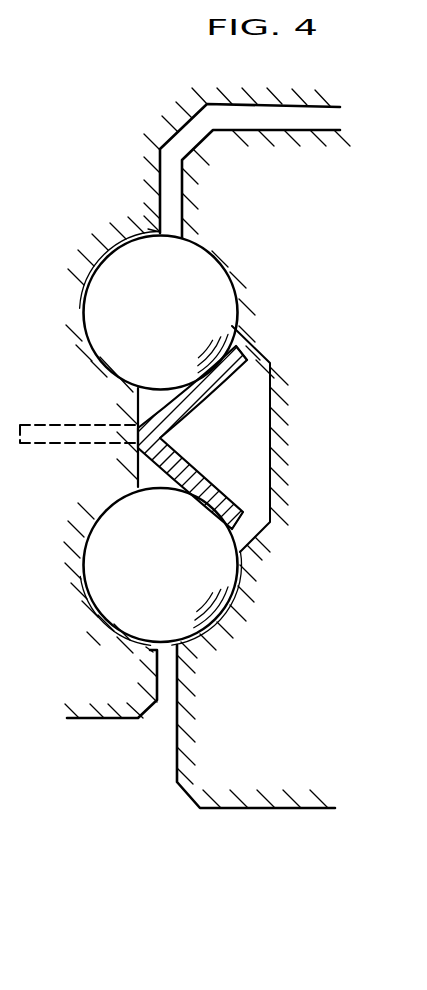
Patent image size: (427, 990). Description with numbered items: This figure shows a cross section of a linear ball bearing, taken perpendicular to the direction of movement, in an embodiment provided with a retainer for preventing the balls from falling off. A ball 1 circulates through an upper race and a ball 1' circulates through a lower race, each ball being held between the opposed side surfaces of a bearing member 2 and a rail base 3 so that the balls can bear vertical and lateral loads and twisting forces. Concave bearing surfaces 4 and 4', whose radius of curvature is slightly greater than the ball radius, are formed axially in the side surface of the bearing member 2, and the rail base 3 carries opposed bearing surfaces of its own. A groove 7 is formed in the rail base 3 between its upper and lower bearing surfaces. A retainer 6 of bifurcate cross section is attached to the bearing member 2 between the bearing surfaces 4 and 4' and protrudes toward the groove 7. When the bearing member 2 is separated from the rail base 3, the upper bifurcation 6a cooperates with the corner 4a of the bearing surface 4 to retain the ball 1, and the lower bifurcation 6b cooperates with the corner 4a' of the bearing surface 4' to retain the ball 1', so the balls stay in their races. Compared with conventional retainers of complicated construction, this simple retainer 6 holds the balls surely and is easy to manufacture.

The ball 1 is at (179, 313).
The ball 1' is at (171, 572).
The bearing member 2 is at (152, 114).
The rail base 3 is at (235, 140).
The bearing surface 4 is at (92, 274).
The bearing surface 4' is at (132, 586).
The corner of bearing surface 4a is at (123, 208).
The corner of bearing surface 4a' is at (114, 665).
The retainer 6 is at (163, 439).
The bifurcation 6a is at (243, 357).
The bifurcation 6b is at (252, 528).
The groove 7 is at (262, 447).